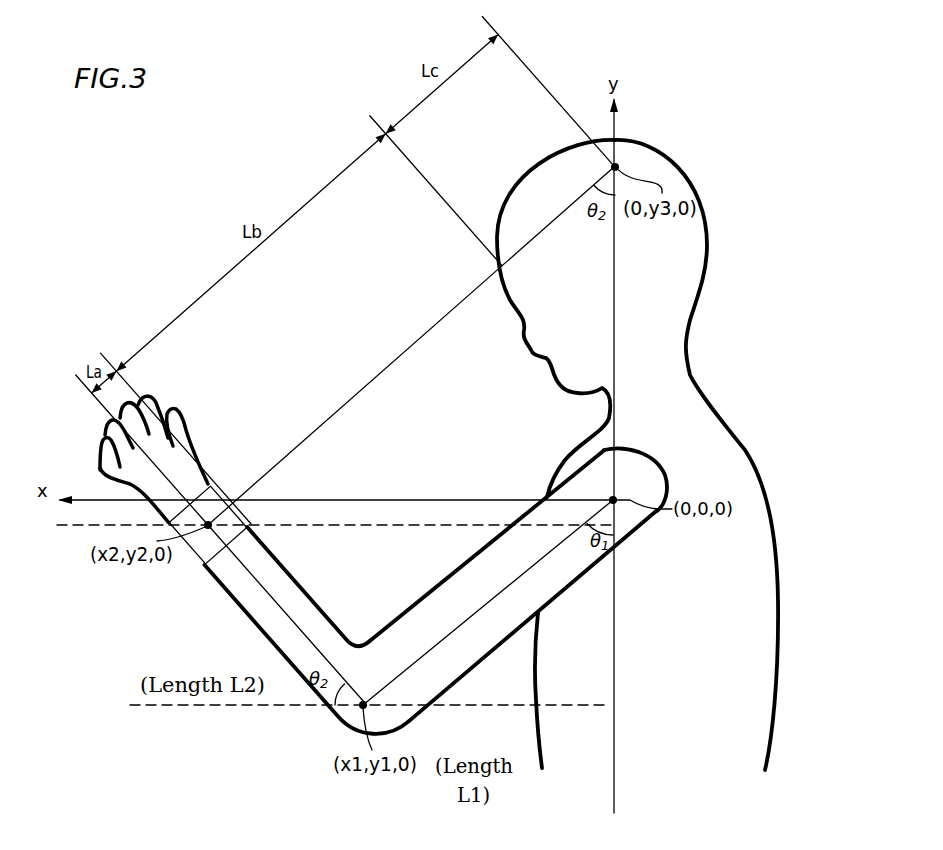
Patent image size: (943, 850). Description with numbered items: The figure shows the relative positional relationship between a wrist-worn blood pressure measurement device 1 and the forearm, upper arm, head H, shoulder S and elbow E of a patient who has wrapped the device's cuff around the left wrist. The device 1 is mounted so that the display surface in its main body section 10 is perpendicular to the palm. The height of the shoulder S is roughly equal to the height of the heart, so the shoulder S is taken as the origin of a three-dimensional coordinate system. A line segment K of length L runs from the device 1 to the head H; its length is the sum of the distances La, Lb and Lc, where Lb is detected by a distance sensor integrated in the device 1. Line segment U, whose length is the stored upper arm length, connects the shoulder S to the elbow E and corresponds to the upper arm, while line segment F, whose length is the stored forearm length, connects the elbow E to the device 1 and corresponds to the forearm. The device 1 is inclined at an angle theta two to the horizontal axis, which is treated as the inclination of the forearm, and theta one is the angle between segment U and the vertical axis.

The blood pressure measurement device 1 is at (193, 568).
The main body section 10 is at (213, 485).
The head H is at (660, 151).
The shoulder S is at (653, 455).
The elbow E is at (333, 728).
The line segment U is at (435, 650).
The line segment F is at (262, 588).
The line segment K is at (393, 358).